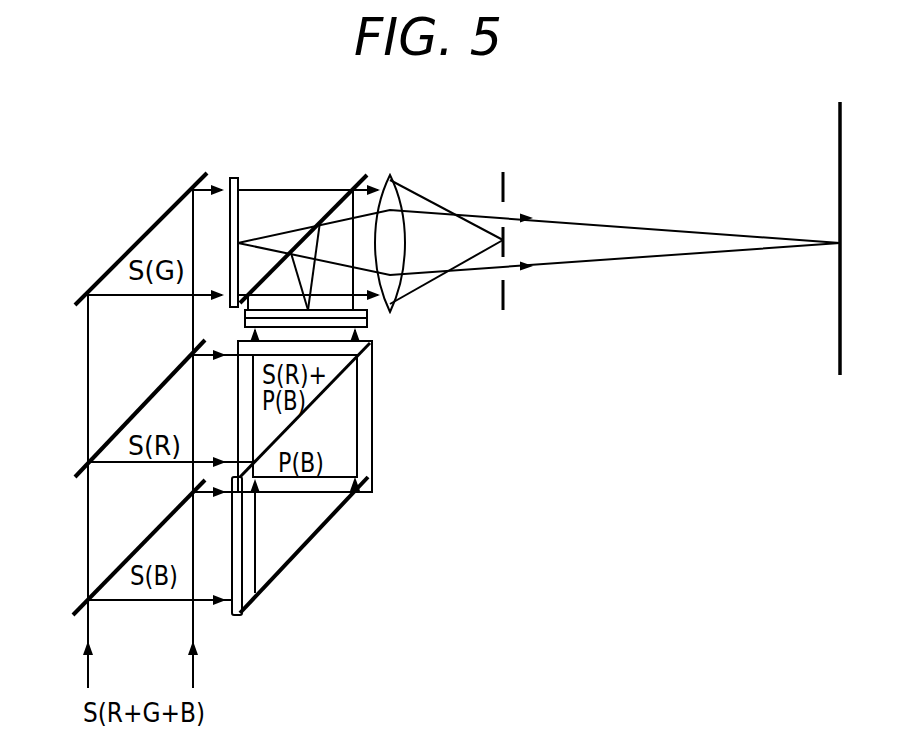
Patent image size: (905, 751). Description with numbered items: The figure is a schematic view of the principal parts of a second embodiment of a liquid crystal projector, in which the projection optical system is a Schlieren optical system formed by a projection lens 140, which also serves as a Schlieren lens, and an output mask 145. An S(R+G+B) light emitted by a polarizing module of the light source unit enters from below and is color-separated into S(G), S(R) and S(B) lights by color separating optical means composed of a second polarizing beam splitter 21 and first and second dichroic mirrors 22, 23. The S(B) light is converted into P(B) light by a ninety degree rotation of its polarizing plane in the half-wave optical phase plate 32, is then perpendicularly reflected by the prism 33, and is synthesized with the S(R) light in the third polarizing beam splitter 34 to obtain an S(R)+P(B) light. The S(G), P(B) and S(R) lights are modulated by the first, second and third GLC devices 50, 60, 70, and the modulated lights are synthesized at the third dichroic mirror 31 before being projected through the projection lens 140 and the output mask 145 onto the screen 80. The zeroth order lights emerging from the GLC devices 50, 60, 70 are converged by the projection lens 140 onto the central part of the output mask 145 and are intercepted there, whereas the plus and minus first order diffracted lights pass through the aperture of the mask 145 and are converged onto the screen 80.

The second polarizing beam splitter 21 is at (80, 300).
The first dichroic mirror 22 is at (80, 473).
The second dichroic mirror 23 is at (80, 603).
The third dichroic mirror 31 is at (362, 185).
The λ/2 optical phase plate 32 is at (237, 617).
The prism 33 is at (337, 505).
The third polarizing beam splitter 34 is at (373, 422).
The first GLC device 50 is at (236, 178).
The second GLC device 60 is at (368, 315).
The third GLC device 70 is at (368, 328).
The screen 80 is at (838, 195).
The projection lens 140 is at (398, 190).
The output mask 145 is at (508, 185).